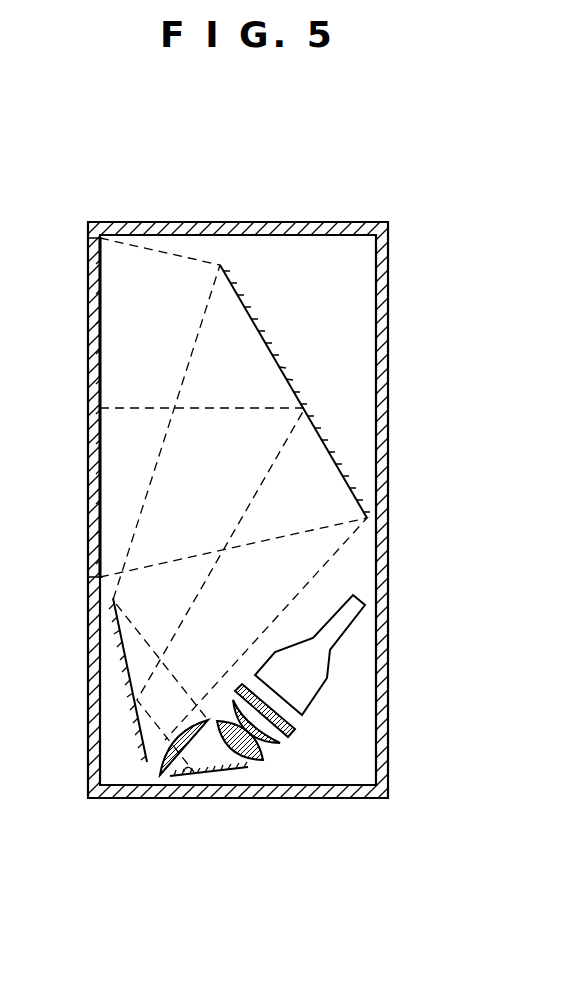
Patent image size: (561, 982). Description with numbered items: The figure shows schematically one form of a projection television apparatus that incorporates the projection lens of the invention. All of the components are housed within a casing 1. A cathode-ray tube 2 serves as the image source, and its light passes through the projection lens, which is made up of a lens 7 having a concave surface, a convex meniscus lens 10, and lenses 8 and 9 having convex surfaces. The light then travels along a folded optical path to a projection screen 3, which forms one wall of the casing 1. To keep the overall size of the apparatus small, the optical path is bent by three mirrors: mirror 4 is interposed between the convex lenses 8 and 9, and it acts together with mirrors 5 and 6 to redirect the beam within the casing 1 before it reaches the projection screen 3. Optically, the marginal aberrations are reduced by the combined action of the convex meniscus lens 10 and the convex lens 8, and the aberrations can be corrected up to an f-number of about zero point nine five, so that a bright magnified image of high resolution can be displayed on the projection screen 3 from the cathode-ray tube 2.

The casing 1 is at (390, 459).
The cathode-ray tube 2 is at (318, 680).
The projection screen 3 is at (92, 395).
The mirror 4 is at (187, 776).
The mirror 5 is at (123, 657).
The mirror 6 is at (318, 422).
The lens having a concave surface 7 is at (293, 728).
The convex lens 8 is at (245, 762).
The convex lens 9 is at (160, 775).
The convex meniscus lens 10 is at (268, 752).